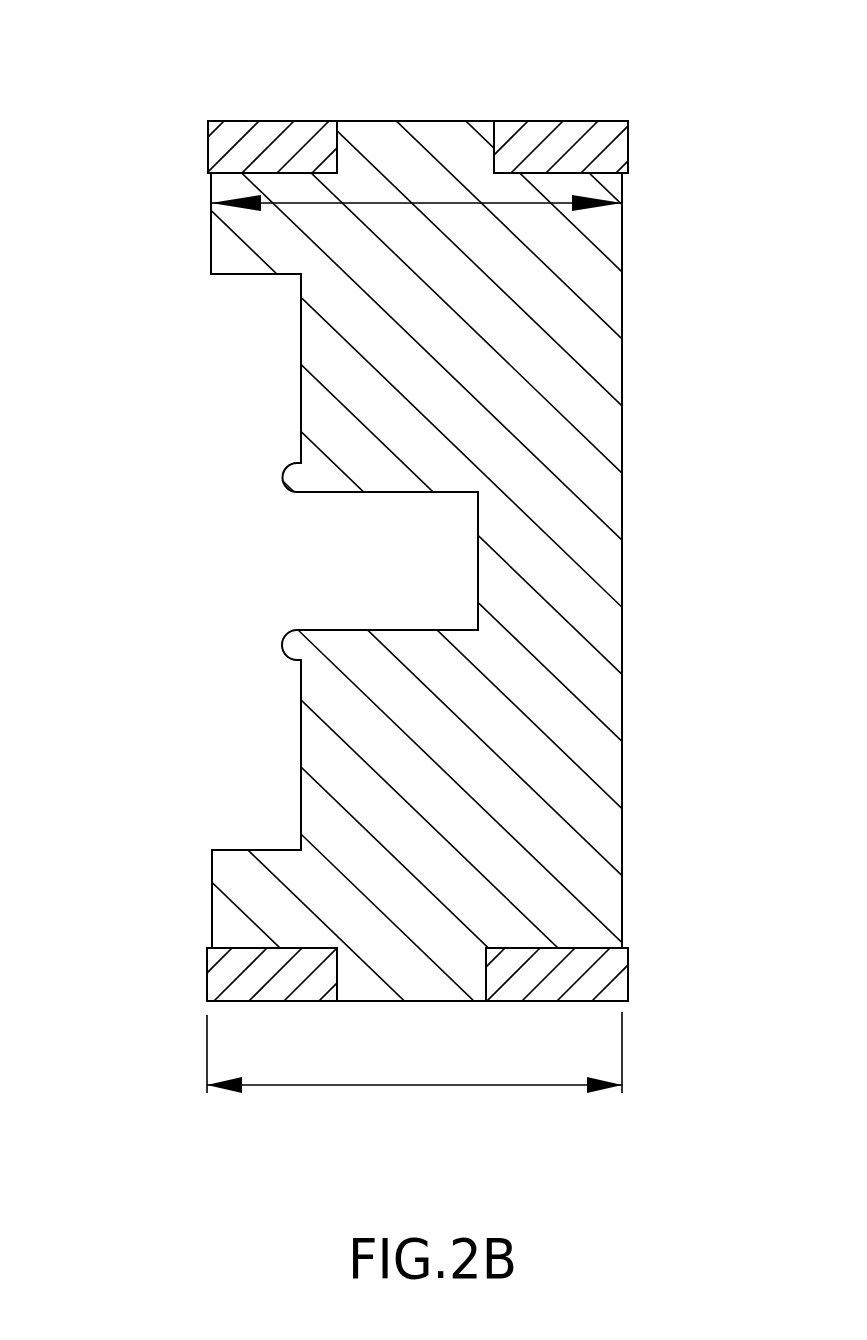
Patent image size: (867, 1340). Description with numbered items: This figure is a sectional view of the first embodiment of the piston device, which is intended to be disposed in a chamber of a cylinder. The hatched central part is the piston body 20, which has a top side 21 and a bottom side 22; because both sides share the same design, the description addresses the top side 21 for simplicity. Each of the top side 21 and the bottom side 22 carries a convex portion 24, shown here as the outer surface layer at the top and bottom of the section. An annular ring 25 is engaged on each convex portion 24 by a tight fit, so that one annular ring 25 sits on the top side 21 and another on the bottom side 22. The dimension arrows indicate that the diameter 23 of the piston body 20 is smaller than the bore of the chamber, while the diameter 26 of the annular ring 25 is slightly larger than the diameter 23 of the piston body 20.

The piston body 20 is at (622, 507).
The top side 21 is at (590, 175).
The bottom side 22 is at (560, 948).
The diameter of the piston body 23 is at (553, 207).
The convex portion 24 is at (437, 118).
The annular ring 25 is at (208, 147).
The diameter of the annular ring 26 is at (207, 1072).